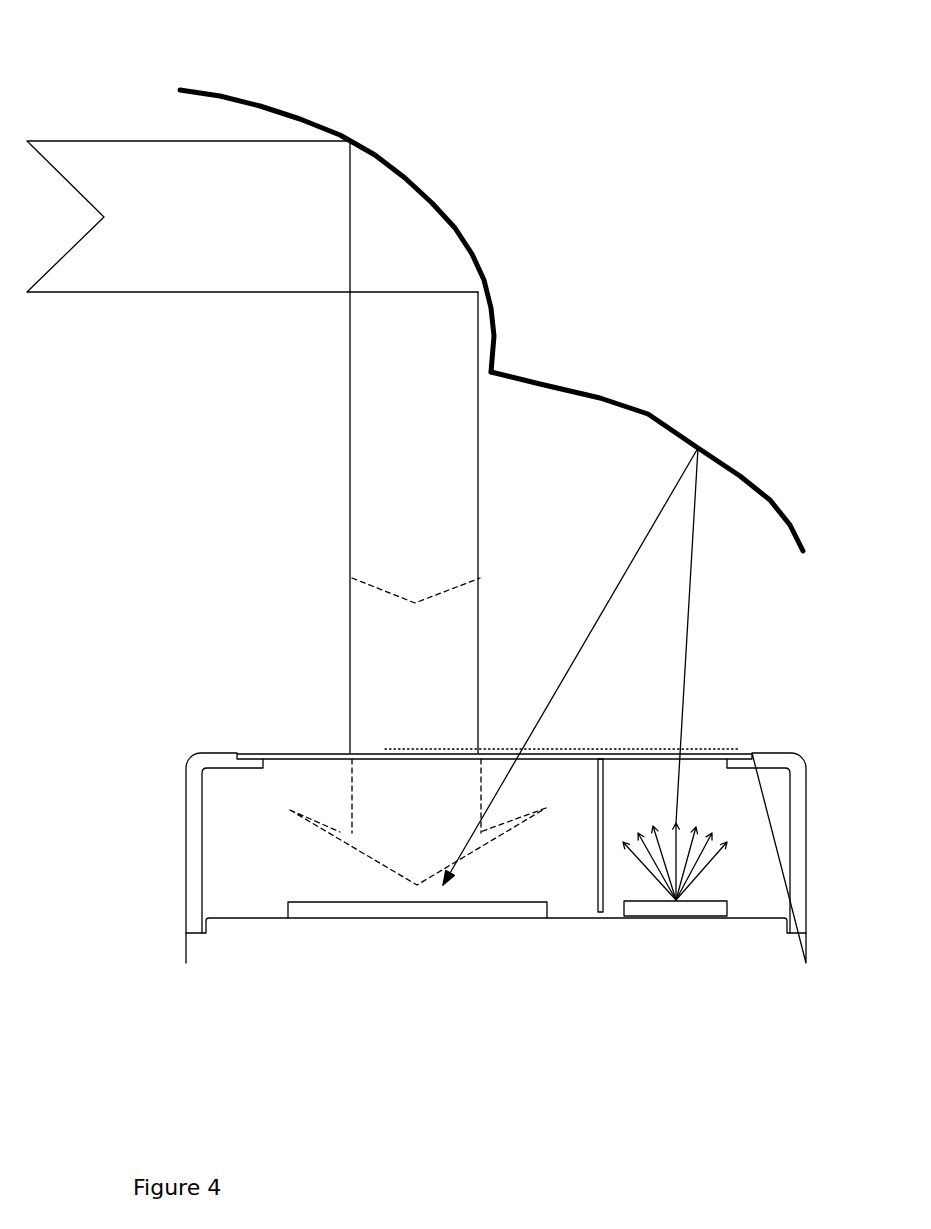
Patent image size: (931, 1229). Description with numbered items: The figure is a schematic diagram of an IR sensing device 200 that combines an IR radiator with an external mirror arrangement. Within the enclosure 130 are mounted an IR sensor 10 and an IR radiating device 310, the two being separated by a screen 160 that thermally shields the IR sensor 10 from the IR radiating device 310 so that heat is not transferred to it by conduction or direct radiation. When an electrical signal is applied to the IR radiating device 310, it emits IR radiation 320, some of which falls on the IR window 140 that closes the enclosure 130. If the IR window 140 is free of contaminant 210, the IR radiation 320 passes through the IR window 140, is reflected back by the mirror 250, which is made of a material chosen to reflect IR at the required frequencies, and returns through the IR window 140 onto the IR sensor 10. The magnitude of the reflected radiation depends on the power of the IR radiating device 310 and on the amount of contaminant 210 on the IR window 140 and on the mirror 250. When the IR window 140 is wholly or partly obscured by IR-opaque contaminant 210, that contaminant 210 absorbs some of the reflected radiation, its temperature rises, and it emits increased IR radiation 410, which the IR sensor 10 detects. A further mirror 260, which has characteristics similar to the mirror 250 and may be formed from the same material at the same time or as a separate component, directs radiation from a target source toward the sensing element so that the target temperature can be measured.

The IR sensing device 200 is at (661, 140).
The mirror 260 is at (468, 243).
The mirror 250 is at (647, 414).
The enclosure 130 is at (195, 894).
The IR window 140 is at (292, 752).
The contaminant 210 is at (578, 745).
The IR radiation emitted by contaminant 410 is at (340, 833).
The IR sensor 10 is at (469, 910).
The screen 160 is at (601, 913).
The IR radiating device 310 is at (687, 908).
The IR radiation 320 is at (703, 860).